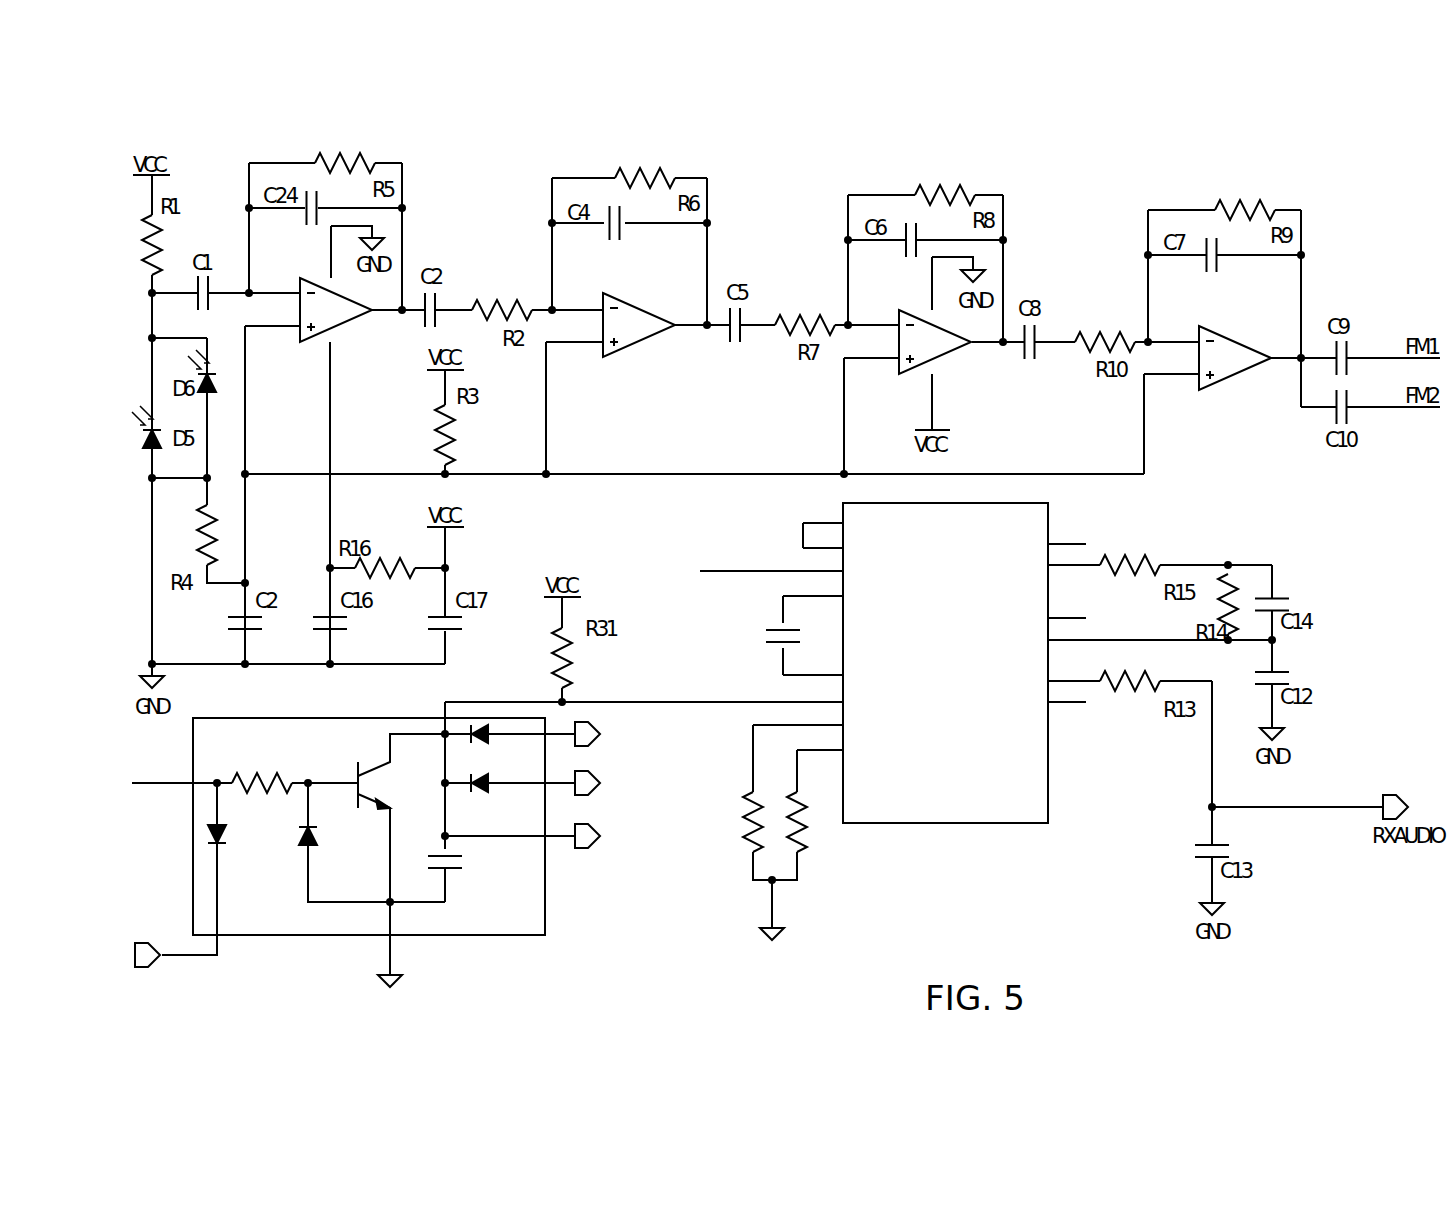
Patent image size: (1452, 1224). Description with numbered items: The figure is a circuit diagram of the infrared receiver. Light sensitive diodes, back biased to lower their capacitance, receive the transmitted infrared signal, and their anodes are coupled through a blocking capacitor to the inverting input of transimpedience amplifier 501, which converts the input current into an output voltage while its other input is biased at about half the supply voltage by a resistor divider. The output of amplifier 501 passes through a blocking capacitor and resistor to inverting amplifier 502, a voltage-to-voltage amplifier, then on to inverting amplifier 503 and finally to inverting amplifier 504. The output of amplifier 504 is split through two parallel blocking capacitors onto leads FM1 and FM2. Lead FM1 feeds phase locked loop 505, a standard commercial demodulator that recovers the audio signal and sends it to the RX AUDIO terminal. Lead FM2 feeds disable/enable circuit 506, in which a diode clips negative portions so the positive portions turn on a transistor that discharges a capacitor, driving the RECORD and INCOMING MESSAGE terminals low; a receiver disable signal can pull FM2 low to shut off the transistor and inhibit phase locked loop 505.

The transimpedience amplifier 501 is at (362, 321).
The inverting amplifier 502 is at (655, 336).
The inverting amplifier 503 is at (950, 352).
The inverting amplifier 504 is at (1248, 372).
The phase locked loop 505 is at (958, 823).
The disable/enable circuit 506 is at (290, 935).